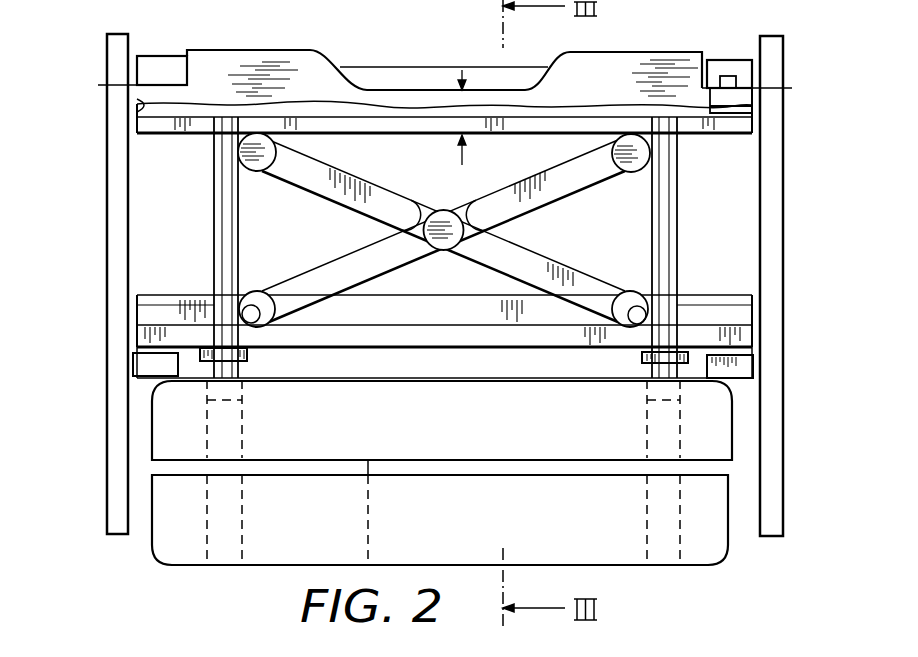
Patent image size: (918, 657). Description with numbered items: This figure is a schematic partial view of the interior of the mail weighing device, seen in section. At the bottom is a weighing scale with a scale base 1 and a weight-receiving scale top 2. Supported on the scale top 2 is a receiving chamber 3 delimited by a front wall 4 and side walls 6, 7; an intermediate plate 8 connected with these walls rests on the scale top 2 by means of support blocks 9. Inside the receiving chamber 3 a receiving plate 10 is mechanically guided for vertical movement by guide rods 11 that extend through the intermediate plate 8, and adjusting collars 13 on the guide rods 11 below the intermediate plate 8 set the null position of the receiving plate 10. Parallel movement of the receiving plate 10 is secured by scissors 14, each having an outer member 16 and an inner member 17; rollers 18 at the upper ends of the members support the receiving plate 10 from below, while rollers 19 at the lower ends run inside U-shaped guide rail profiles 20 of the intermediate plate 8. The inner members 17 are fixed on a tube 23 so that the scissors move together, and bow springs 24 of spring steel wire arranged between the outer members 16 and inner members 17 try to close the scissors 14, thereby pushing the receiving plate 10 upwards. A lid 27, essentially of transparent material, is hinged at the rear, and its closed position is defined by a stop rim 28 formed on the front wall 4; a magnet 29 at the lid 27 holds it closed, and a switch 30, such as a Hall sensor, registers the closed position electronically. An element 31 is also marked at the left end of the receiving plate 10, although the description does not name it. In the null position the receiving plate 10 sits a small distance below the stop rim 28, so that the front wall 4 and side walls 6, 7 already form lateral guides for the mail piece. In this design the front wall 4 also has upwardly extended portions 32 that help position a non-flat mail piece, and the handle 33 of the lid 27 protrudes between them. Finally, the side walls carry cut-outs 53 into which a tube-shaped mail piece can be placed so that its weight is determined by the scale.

The scale base 1 is at (707, 548).
The weight-receiving scale top 2 is at (730, 425).
The receiving chamber 3 is at (306, 234).
The front wall 4 is at (479, 100).
The side wall 6 is at (113, 240).
The side wall 7 is at (782, 240).
The intermediate plate 8 is at (375, 348).
The support blocks 9 is at (150, 365).
The receiving plate 10 is at (603, 128).
The guide rods 11 is at (215, 222).
The adjusting collars 13 is at (247, 356).
The scissors 14 is at (417, 264).
The outer member 16 is at (575, 272).
The inner member 17 is at (577, 188).
The rollers 18 is at (257, 171).
The rollers 19 is at (257, 293).
The U-shaped guide rail profiles 20 is at (720, 317).
The tube 23 is at (443, 211).
The bow springs 24 is at (388, 203).
The lid 27 is at (160, 63).
The stop rim 28 is at (392, 86).
The magnet 29 is at (734, 84).
The switch 30 is at (728, 100).
The left end fitting 31 is at (138, 118).
The upwardly extended portions 32 is at (230, 63).
The handle 33 is at (413, 75).
The cut-outs 53 is at (116, 33).